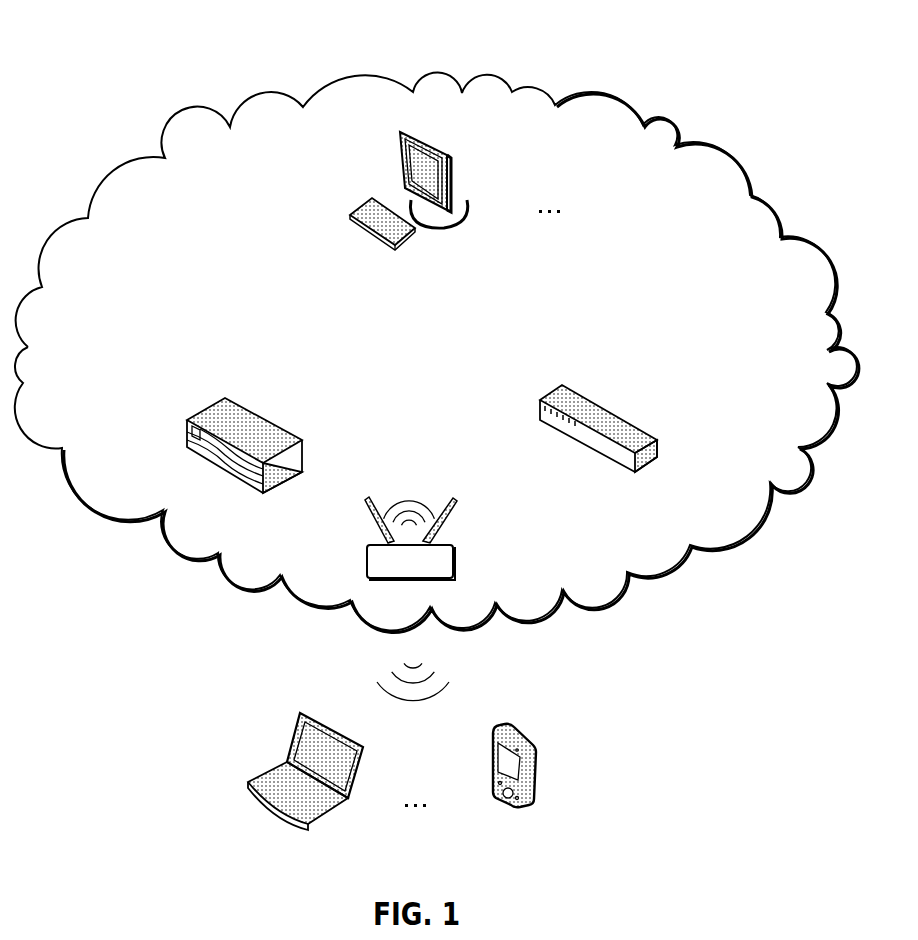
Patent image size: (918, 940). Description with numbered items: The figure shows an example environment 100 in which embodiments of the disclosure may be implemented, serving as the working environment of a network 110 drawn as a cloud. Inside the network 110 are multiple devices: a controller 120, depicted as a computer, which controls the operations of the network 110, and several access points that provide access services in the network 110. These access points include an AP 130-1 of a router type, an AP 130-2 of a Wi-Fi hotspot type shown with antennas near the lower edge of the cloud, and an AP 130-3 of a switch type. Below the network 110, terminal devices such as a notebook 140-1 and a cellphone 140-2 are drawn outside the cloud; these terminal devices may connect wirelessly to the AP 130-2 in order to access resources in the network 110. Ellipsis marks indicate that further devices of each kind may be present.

The environment 100 is at (226, 31).
The network 110 is at (612, 90).
The controller 120 is at (456, 159).
The AP 130-1 is at (287, 430).
The AP 130-2 is at (458, 533).
The AP 130-3 is at (613, 412).
The notebook 140-1 is at (352, 745).
The cellphone 140-2 is at (522, 733).